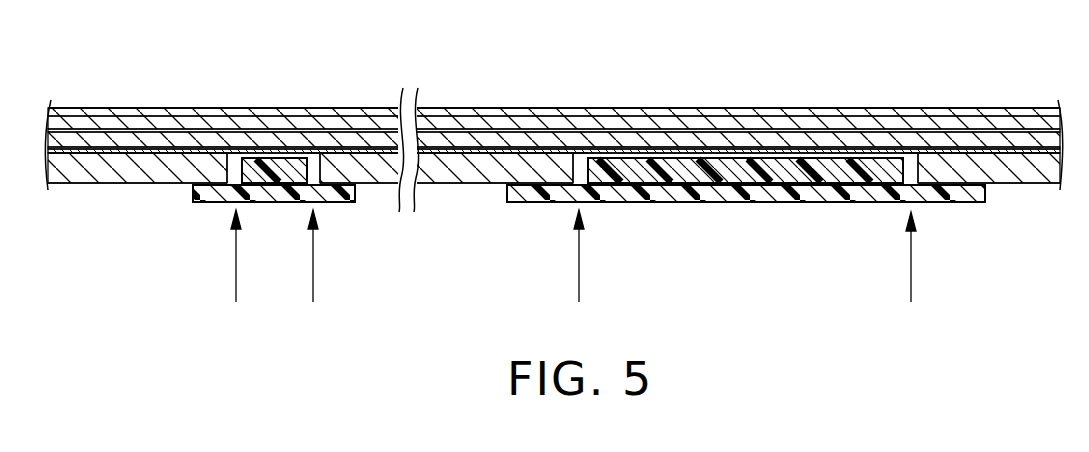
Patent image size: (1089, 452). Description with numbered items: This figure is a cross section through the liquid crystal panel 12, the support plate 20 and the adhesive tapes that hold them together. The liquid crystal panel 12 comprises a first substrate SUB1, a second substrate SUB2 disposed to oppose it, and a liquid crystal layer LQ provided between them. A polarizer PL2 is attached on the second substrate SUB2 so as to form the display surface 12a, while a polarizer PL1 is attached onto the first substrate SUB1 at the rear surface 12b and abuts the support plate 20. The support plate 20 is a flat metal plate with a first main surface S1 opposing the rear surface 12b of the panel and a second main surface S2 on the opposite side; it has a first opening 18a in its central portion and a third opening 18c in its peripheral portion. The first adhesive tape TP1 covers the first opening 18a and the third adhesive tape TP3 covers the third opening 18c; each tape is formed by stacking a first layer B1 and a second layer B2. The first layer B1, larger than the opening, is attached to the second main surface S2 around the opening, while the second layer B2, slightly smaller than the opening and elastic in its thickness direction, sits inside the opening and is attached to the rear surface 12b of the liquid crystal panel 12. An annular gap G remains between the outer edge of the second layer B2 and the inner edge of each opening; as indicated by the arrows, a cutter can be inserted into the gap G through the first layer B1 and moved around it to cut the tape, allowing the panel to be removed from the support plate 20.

The liquid crystal panel 12 is at (689, 104).
The display surface 12a is at (463, 108).
The rear surface 12b is at (460, 156).
The first opening 18a is at (905, 170).
The third opening 18c is at (237, 165).
The support plate 20 is at (1020, 184).
The first main surface S1 is at (147, 147).
The second main surface S2 is at (125, 184).
The first substrate SUB1 is at (938, 140).
The second substrate SUB2 is at (1014, 116).
The liquid crystal layer LQ is at (962, 127).
The polarizer PL1 is at (547, 152).
The polarizer PL2 is at (605, 115).
The first adhesive tape TP1 is at (738, 208).
The third adhesive tape TP3 is at (205, 208).
The first layer B1 is at (275, 190).
The second layer B2 is at (287, 176).
The gap G is at (313, 163).